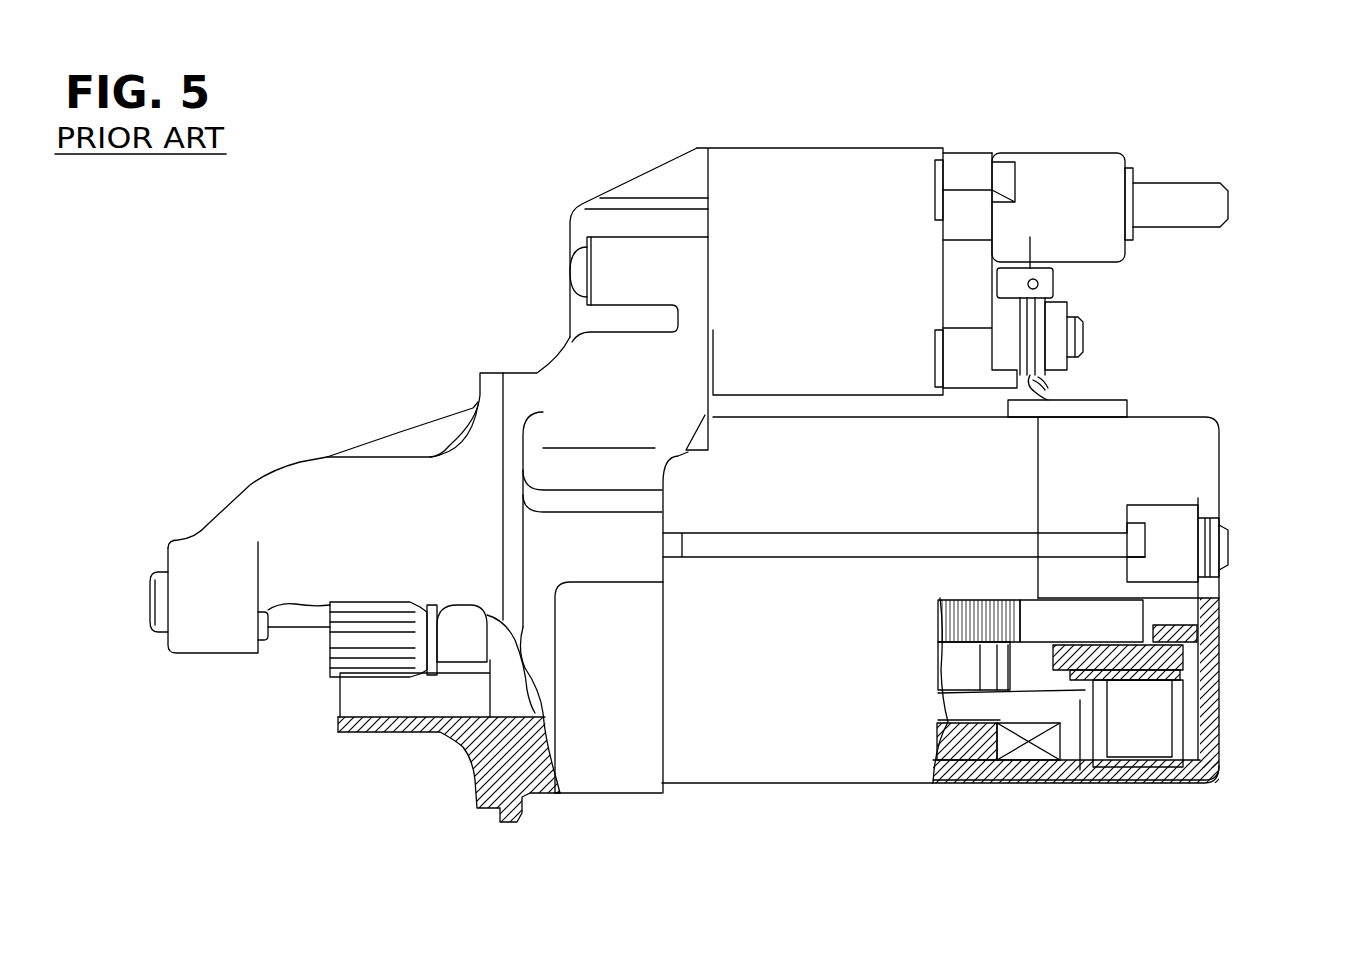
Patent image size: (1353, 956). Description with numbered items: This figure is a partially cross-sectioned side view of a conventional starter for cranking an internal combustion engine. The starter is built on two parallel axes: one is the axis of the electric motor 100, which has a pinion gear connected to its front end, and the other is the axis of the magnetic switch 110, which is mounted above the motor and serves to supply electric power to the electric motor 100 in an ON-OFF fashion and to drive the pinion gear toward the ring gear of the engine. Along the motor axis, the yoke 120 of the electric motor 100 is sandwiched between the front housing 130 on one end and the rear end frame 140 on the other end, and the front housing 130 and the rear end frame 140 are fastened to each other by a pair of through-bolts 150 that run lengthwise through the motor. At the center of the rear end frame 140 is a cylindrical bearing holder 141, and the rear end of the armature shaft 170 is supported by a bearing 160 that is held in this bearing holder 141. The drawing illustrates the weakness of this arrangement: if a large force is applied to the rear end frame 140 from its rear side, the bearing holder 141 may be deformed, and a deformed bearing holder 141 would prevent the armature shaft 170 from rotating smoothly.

The electric motor 100 is at (897, 770).
The magnetic switch 110 is at (834, 147).
The yoke 120 is at (972, 778).
The front housing 130 is at (600, 773).
The rear end frame 140 is at (1203, 453).
The bearing holder 141 is at (1187, 647).
The through-bolts 150 is at (753, 550).
The bearing 160 is at (1193, 633).
The armature shaft 170 is at (1095, 602).